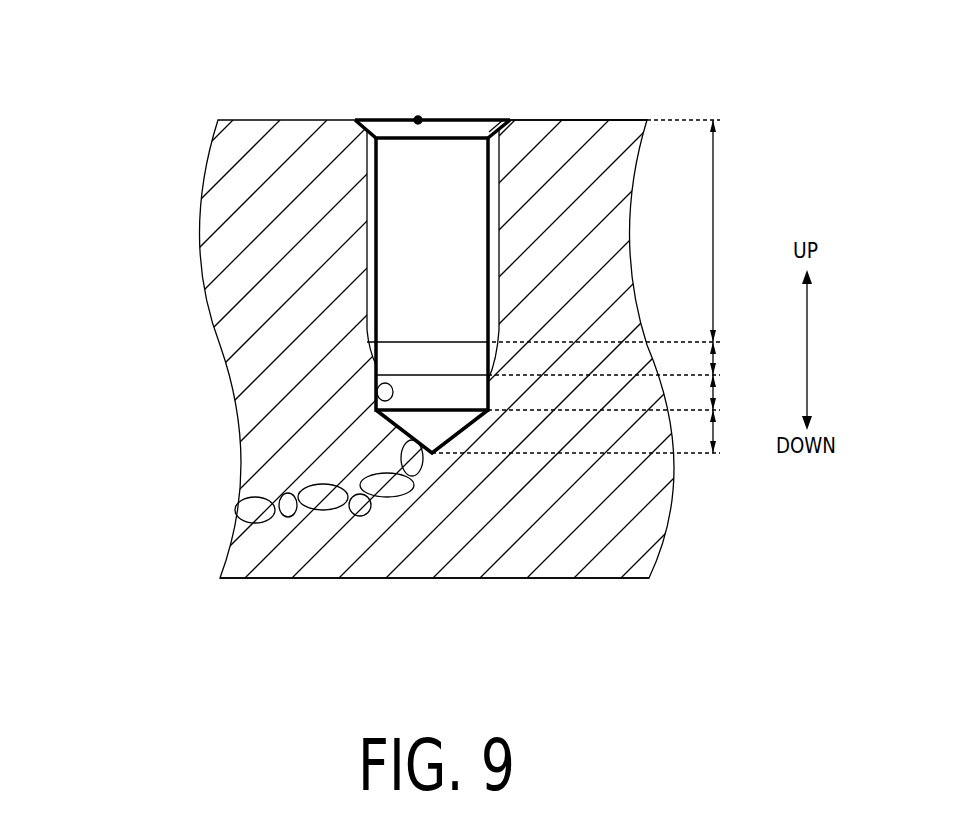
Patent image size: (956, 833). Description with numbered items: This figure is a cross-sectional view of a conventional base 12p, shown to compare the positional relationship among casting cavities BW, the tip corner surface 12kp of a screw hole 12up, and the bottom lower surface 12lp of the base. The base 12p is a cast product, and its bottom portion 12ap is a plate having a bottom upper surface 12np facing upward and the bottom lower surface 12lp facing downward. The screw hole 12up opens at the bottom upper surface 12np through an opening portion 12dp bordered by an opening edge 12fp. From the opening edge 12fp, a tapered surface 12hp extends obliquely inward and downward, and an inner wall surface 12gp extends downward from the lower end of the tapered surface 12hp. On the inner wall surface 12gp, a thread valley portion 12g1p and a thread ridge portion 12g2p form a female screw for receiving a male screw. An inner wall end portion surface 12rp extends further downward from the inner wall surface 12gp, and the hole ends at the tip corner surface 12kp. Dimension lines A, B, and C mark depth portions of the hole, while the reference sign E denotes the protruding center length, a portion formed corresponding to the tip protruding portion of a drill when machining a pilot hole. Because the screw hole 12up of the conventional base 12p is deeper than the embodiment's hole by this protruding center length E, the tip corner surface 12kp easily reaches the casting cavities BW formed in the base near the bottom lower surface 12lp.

The conventional base 12p is at (188, 578).
The bottom lower surface 12lp is at (555, 578).
The screw hole 12up is at (461, 100).
The opening edge 12fp is at (357, 119).
The opening portion 12dp is at (418, 118).
The tapered surface 12hp is at (503, 118).
The bottom upper surface 12np is at (570, 119).
The bottom portion 12ap is at (620, 106).
The inner wall surface 12gp is at (268, 270).
The thread valley portion 12g1p is at (367, 223).
The thread ridge portion 12g2p is at (376, 285).
The inner wall end portion surface 12rp is at (377, 392).
The tip corner surface 12kp is at (401, 460).
The casting cavities BW is at (262, 516).
The dimension A is at (723, 231).
The dimension B is at (722, 359).
The dimension C is at (722, 392).
The protruding center length E is at (721, 431).